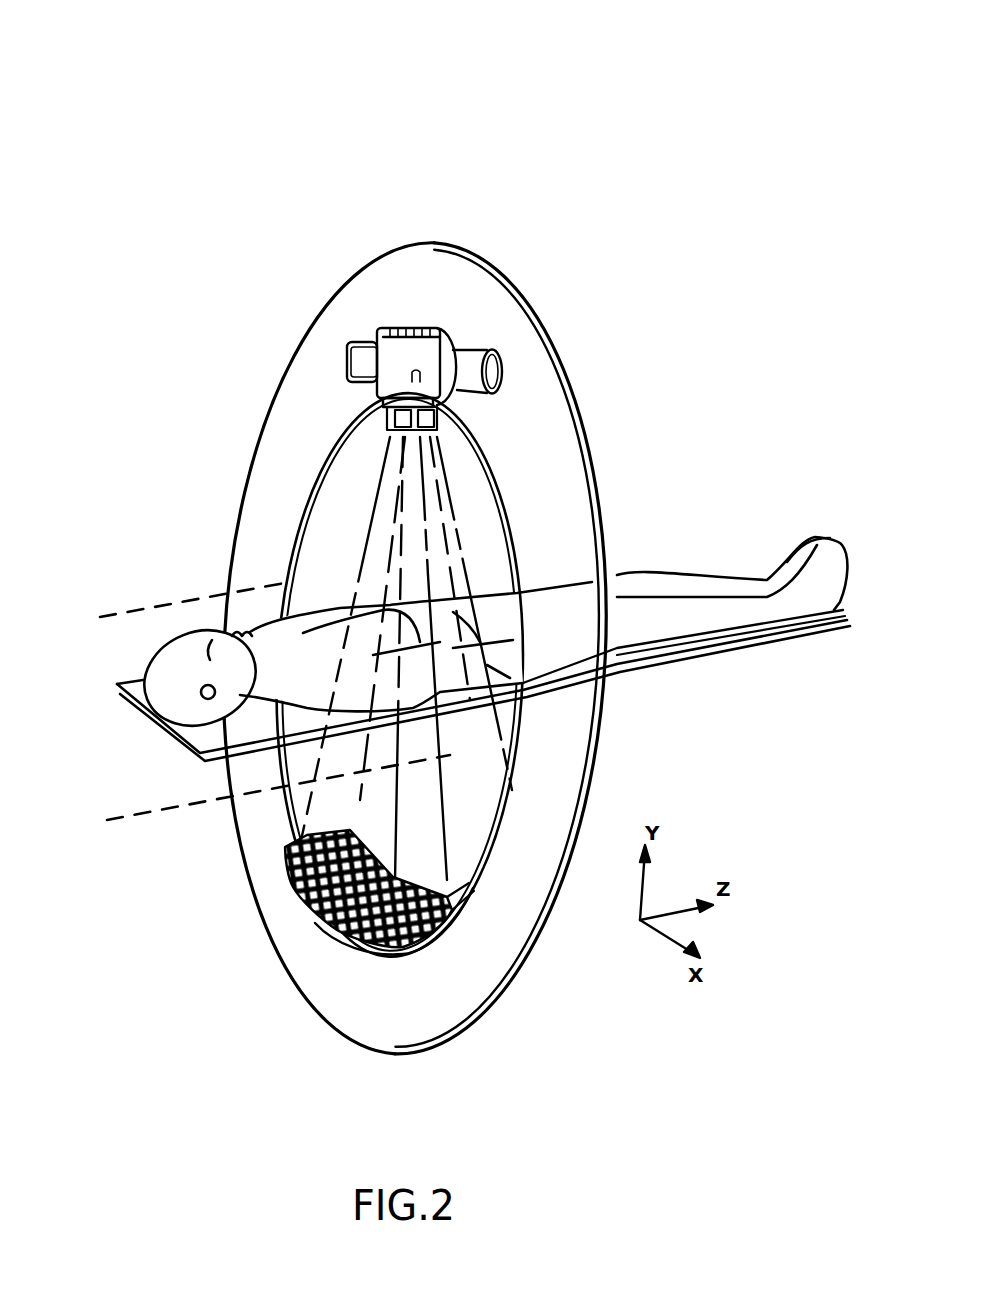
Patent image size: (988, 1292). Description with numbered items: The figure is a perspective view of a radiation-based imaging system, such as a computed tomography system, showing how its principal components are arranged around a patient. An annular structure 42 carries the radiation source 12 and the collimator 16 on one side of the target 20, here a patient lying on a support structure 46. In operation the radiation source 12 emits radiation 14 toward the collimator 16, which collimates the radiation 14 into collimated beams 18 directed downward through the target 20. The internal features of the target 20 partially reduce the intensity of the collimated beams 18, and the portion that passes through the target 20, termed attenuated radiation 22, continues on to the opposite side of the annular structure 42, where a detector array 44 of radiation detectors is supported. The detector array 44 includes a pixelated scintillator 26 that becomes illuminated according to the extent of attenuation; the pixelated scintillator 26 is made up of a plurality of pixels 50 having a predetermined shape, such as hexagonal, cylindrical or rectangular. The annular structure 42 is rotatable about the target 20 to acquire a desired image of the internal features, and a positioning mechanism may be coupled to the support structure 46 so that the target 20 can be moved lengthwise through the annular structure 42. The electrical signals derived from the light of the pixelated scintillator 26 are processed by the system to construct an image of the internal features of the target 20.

The radiation source 12 is at (395, 362).
The radiation 14 is at (418, 360).
The collimator 16 is at (388, 418).
The collimated beams 18 is at (450, 490).
The target 20 is at (442, 650).
The attenuated radiation 22 is at (135, 58).
The pixelated scintillator 26 is at (298, 894).
The annular structure 42 is at (355, 297).
The detector array 44 is at (452, 910).
The support structure 46 is at (117, 697).
The pixels 50 is at (323, 922).